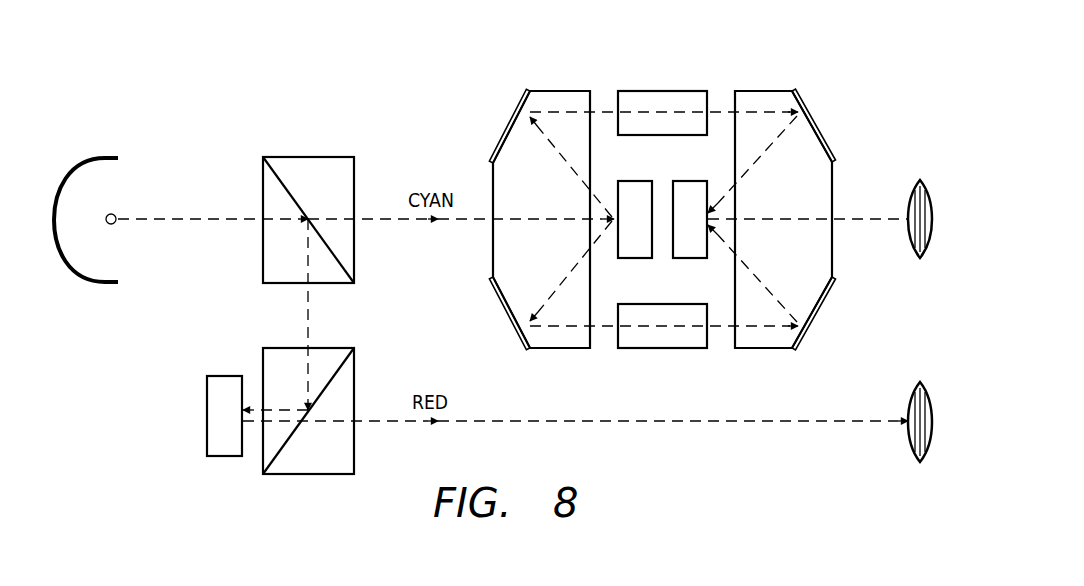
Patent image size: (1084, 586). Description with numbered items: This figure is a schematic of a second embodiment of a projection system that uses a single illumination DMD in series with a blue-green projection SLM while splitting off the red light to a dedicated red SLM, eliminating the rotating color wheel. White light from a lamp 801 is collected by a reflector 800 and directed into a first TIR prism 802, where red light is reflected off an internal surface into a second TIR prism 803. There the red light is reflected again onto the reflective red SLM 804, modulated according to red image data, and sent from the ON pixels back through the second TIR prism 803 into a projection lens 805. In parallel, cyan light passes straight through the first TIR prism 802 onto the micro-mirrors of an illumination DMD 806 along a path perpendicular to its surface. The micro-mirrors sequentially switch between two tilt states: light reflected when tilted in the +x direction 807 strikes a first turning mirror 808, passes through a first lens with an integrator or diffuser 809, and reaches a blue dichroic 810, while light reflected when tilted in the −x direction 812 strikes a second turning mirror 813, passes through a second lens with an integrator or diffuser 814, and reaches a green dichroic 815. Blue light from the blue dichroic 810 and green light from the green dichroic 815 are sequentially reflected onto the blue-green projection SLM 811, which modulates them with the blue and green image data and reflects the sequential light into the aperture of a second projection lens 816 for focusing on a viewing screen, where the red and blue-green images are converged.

The reflector 800 is at (104, 157).
The lamp 801 is at (114, 223).
The first TIR prism 802 is at (306, 157).
The second TIR prism 803 is at (302, 476).
The red SLM 804 is at (207, 417).
The projection lens 805 is at (921, 463).
The illumination DMD 806 is at (635, 258).
The +x direction 807 is at (556, 148).
The first turning mirror 808 is at (510, 128).
The first lens with an integrator or diffuser 809 is at (660, 90).
The blue dichroic 810 is at (805, 100).
The blue-green projection SLM 811 is at (690, 180).
The −x direction 812 is at (556, 288).
The second turning mirror 813 is at (508, 310).
The second lens with an integrator or diffuser 814 is at (662, 350).
The green dichroic 815 is at (805, 340).
The second projection lens 816 is at (921, 180).